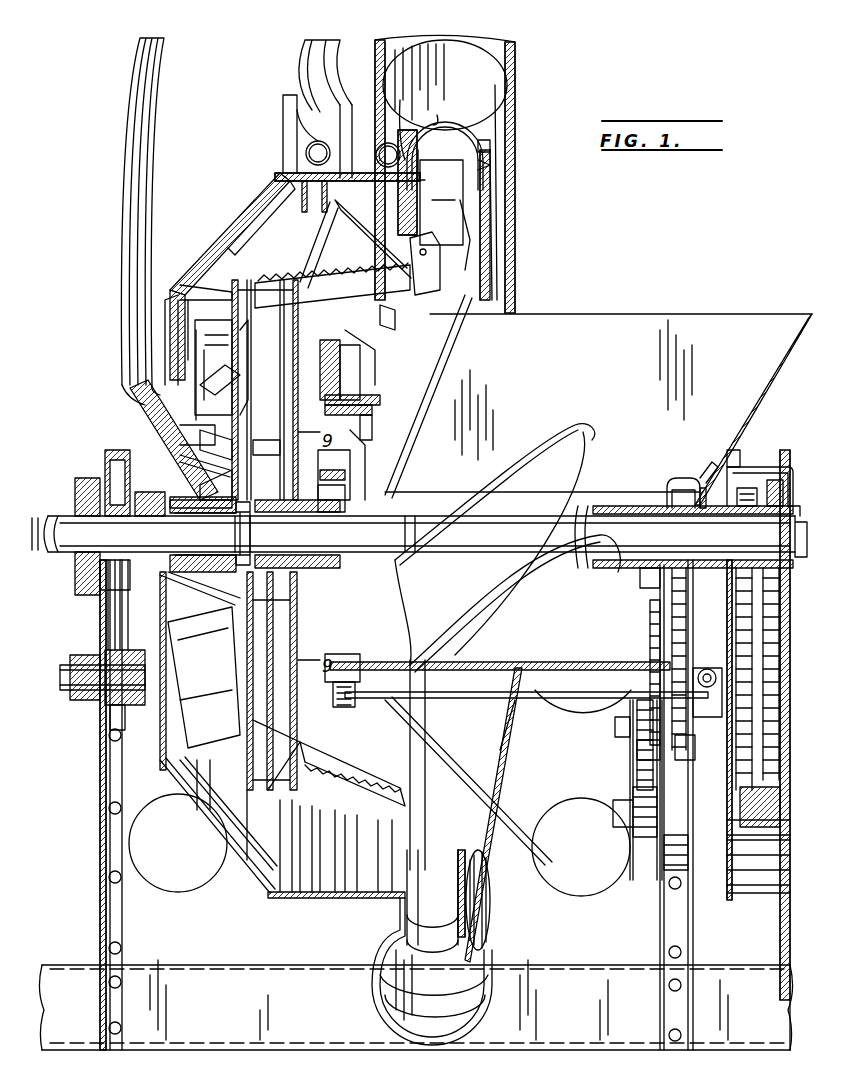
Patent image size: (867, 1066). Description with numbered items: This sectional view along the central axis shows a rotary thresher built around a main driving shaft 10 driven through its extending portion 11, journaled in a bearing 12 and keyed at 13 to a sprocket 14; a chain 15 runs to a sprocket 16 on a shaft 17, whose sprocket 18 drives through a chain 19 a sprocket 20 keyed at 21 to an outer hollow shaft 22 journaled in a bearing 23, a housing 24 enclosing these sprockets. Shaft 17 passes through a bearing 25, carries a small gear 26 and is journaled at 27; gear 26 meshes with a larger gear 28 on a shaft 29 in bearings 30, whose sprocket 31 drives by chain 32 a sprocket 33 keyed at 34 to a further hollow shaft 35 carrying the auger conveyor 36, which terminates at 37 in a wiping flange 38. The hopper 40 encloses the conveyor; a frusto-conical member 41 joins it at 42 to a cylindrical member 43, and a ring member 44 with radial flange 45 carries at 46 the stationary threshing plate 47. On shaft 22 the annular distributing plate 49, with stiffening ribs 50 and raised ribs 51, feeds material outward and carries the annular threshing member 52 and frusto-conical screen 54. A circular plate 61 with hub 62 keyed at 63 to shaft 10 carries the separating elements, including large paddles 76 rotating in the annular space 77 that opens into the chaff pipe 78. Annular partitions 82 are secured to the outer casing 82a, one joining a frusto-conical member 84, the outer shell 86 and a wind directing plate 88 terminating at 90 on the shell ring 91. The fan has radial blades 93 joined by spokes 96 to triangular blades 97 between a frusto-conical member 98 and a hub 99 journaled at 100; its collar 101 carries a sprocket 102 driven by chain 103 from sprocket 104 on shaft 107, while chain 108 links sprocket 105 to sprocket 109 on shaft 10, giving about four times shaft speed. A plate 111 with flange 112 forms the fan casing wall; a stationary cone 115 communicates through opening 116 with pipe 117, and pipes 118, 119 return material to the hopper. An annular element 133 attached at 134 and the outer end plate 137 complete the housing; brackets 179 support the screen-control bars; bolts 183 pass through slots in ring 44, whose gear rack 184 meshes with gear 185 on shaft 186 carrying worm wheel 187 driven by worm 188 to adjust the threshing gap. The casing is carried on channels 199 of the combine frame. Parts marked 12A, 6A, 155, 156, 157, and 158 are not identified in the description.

The main driving shaft 10 is at (780, 590).
The extending portion 11 is at (48, 522).
The bearing 12 is at (85, 500).
The bracket 12A is at (283, 112).
The key 13 is at (806, 522).
The sprocket 14 is at (784, 490).
The chain 15 is at (781, 630).
The sprocket 16 is at (782, 780).
The shaft 17 is at (780, 815).
The sprocket 18 is at (740, 790).
The chain 19 is at (740, 610).
The sprocket 20 is at (692, 600).
The key 21 is at (740, 527).
The outer hollow shaft 22 is at (670, 476).
The bearing 23 is at (725, 495).
The housing 24 is at (798, 480).
The bearing 25 is at (690, 833).
The small gear 26 is at (650, 862).
The journal 27 is at (612, 832).
The larger gear 28 is at (637, 762).
The shaft 29 is at (637, 750).
The bearings 30 is at (618, 725).
The sprocket 31 is at (680, 758).
The chain 32 is at (652, 640).
The sprocket 33 is at (660, 592).
The key 34 is at (668, 522).
The further hollow shaft 35 is at (622, 505).
The auger conveyor 36 is at (585, 432).
The conveyor terminus 37 is at (366, 440).
The wiping flange 38 is at (320, 470).
The hopper 40 is at (668, 318).
The frusto-conical member 41 is at (475, 332).
The attachment point 42 is at (375, 408).
The cylindrical member 43 is at (372, 425).
The ring member 44 is at (375, 395).
The radial flange 45 is at (350, 365).
The attachment point 46 is at (330, 360).
The stationary threshing plate 47 is at (345, 340).
The annular distributing plate 49 is at (325, 492).
The radial stiffening ribs 50 is at (275, 480).
The arcuate raised ribs 51 is at (320, 480).
The annular threshing member 52 is at (382, 340).
The frusto-conical screen member 54 is at (405, 270).
The circular plate 61 is at (270, 425).
The hub 62 is at (258, 530).
The key 63 is at (292, 528).
The plate 6A is at (240, 365).
The large paddles 76 is at (470, 205).
The open annular space 77 is at (485, 137).
The chaff pipe 78 is at (518, 60).
The annular partitions 82 is at (293, 165).
The cylindrical outer casing 82a is at (350, 898).
The frusto-conical member 84 is at (268, 190).
The outer shell member 86 is at (225, 235).
The wind directing plate 88 is at (190, 280).
The termination point 90 is at (145, 372).
The vertical shell ring 91 is at (165, 315).
The radial fan blades 93 is at (220, 345).
The spoke members 96 is at (220, 418).
The triangular fan blades 97 is at (232, 486).
The frusto-conical member 98 is at (228, 462).
The hub 99 is at (208, 515).
The fan bearing location 100 is at (240, 535).
The collar 101 is at (150, 495).
The sprocket 102 is at (140, 500).
The drive chain 103 is at (120, 598).
The sprocket 104 is at (165, 650).
The second sprocket 105 is at (112, 710).
The shaft 107 is at (60, 690).
The second chain 108 is at (108, 618).
The sprocket 109 is at (100, 582).
The plate 111 is at (240, 392).
The outer flange portion 112 is at (232, 438).
The stationary cone member 115 is at (200, 582).
The opening 116 is at (232, 500).
The tubular pipe 117 is at (342, 70).
The pipe 118 is at (412, 122).
The pipe 119 is at (290, 140).
The annular element 133 is at (420, 190).
The attachment point 134 is at (418, 155).
The outer end plate 137 is at (500, 750).
The opening 155 is at (437, 112).
The bracket 156 is at (492, 152).
The pin 157 is at (485, 178).
The wall 158 is at (510, 100).
The brackets 179 is at (445, 250).
The bolts 183 is at (360, 380).
The arcuate gear rack 184 is at (375, 668).
The small gear 185 is at (352, 707).
The shaft 186 is at (440, 712).
The worm wheel 187 is at (690, 690).
The worm 188 is at (705, 666).
The channels 199 is at (745, 965).